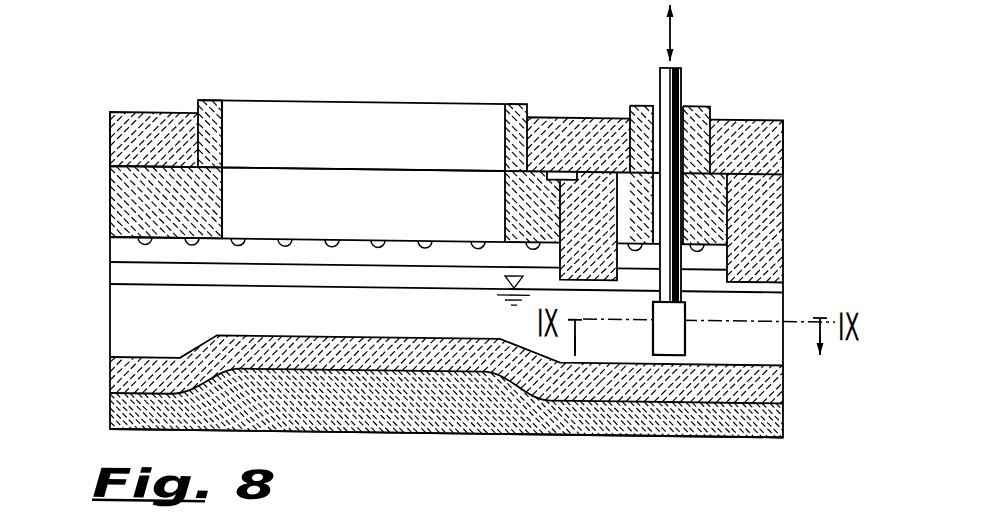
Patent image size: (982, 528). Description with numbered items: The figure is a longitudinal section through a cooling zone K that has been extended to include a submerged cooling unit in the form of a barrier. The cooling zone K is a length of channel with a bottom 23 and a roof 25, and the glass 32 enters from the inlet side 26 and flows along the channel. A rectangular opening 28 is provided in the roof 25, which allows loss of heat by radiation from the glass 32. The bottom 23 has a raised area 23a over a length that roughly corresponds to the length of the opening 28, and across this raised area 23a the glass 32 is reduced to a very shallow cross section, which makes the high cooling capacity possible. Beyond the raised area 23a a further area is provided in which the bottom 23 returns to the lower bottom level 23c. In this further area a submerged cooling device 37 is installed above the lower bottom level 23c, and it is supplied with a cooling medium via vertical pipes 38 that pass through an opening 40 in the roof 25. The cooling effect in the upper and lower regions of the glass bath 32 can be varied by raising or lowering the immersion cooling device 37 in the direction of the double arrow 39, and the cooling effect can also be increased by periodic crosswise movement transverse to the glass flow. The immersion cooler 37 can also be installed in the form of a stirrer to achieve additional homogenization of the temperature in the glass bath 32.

The bottom 23 is at (625, 399).
The raised area 23a is at (320, 330).
The lower bottom level 23c is at (752, 354).
The roof 25 is at (135, 203).
The inlet side 26 is at (108, 322).
The opening 28 is at (355, 117).
The glass 32 is at (432, 323).
The submerged cooling device 37 is at (652, 328).
The vertical pipes 38 is at (682, 83).
The double arrow 39 is at (672, 23).
The opening 40 is at (657, 93).
The cooling zone K is at (807, 94).